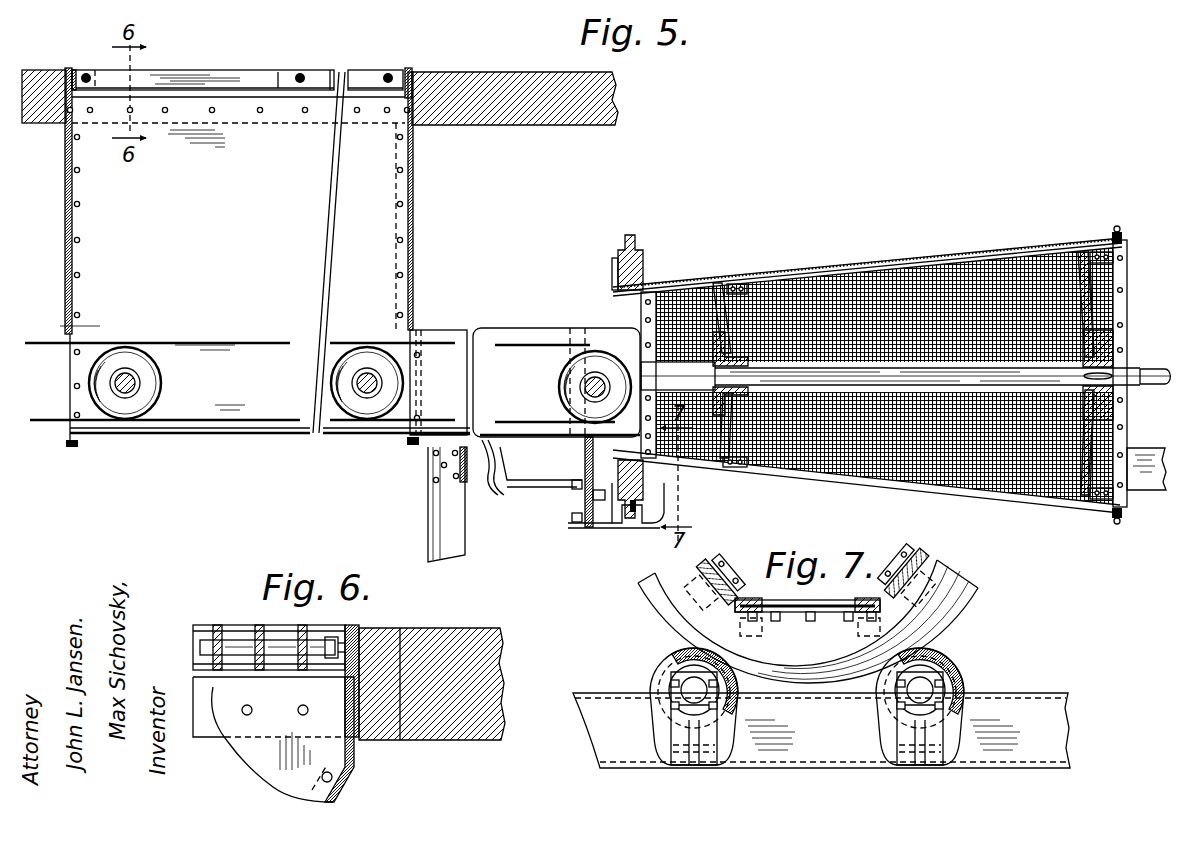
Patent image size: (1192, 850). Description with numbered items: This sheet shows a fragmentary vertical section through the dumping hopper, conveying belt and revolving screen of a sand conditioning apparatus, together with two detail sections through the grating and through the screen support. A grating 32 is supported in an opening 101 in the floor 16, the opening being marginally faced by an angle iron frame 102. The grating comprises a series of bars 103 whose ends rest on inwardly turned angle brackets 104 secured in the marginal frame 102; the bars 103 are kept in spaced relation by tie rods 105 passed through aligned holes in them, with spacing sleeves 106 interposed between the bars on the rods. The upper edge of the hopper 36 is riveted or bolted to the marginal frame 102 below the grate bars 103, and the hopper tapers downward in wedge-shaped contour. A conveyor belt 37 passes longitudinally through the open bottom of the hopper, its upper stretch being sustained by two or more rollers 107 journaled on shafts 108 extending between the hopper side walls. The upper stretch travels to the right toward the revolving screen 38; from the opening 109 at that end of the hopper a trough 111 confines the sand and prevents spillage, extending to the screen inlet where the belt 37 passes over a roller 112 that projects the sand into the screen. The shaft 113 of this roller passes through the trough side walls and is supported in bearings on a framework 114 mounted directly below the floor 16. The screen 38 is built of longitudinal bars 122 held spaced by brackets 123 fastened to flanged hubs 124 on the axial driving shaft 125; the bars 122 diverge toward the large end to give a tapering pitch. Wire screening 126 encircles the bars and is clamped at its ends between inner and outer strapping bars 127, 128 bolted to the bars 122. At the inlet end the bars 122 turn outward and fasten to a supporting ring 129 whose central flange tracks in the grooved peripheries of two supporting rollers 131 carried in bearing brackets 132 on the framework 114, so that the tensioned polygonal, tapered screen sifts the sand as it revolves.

In FIG. 5, the floor 16 is at (498, 72).
In FIG. 6, the floor 16 is at (470, 621).
In FIG. 5, the grating 32 is at (228, 68).
In FIG. 6, the grating 32 is at (213, 622).
In FIG. 5, the hopper 36 is at (415, 222).
In FIG. 6, the hopper 36 is at (350, 782).
In FIG. 5, the conveyor belt 37 is at (152, 334).
In FIG. 5, the revolving screen 38 is at (856, 262).
In FIG. 5, the opening 101 is at (64, 126).
In FIG. 5, the angle iron frame 102 is at (55, 60).
In FIG. 6, the angle iron frame 102 is at (405, 621).
In FIG. 5, the bars 103 is at (279, 74).
In FIG. 5, the angle brackets 104 is at (88, 62).
In FIG. 6, the angle brackets 104 is at (352, 628).
In FIG. 5, the tie rods 105 is at (302, 74).
In FIG. 6, the tie rods 105 is at (202, 649).
In FIG. 5, the spacing sleeves 106 is at (304, 78).
In FIG. 6, the spacing sleeves 106 is at (206, 638).
In FIG. 5, the rollers 107 is at (162, 386).
In FIG. 5, the shafts 108 is at (114, 382).
In FIG. 5, the opening 109 is at (416, 322).
In FIG. 5, the trough 111 is at (498, 481).
In FIG. 5, the roller 112 is at (560, 373).
In FIG. 5, the shaft 113 is at (584, 390).
In FIG. 5, the framework 114 is at (426, 490).
In FIG. 7, the framework 114 is at (590, 706).
In FIG. 5, the bars 122 is at (812, 265).
In FIG. 7, the bars 122 is at (737, 597).
In FIG. 5, the brackets 123 is at (716, 286).
In FIG. 5, the flanged hubs 124 is at (1100, 346).
In FIG. 5, the axial driving shaft 125 is at (1130, 372).
In FIG. 5, the wire screening 126 is at (920, 288).
In FIG. 7, the wire screening 126 is at (922, 568).
In FIG. 5, the inner bar of strapping 127 is at (1126, 246).
In FIG. 7, the inner bar of strapping 127 is at (806, 596).
In FIG. 5, the outer bar of strapping 128 is at (1121, 236).
In FIG. 7, the outer bar of strapping 128 is at (808, 621).
In FIG. 5, the supporting ring 129 is at (645, 262).
In FIG. 7, the supporting ring 129 is at (957, 588).
In FIG. 5, the supporting rollers 131 is at (616, 515).
In FIG. 7, the supporting rollers 131 is at (672, 671).
In FIG. 5, the bearing brackets 132 is at (640, 527).
In FIG. 7, the bearing brackets 132 is at (683, 750).